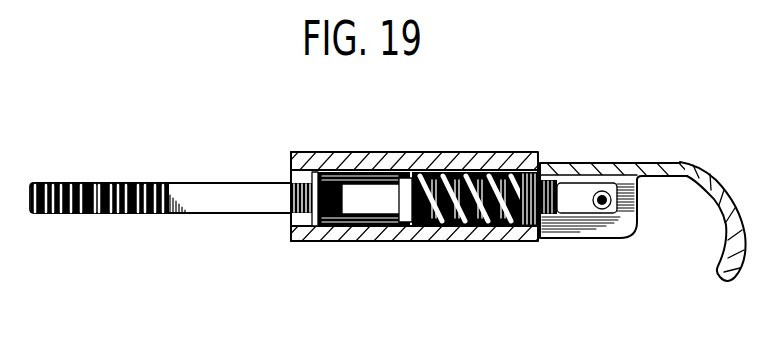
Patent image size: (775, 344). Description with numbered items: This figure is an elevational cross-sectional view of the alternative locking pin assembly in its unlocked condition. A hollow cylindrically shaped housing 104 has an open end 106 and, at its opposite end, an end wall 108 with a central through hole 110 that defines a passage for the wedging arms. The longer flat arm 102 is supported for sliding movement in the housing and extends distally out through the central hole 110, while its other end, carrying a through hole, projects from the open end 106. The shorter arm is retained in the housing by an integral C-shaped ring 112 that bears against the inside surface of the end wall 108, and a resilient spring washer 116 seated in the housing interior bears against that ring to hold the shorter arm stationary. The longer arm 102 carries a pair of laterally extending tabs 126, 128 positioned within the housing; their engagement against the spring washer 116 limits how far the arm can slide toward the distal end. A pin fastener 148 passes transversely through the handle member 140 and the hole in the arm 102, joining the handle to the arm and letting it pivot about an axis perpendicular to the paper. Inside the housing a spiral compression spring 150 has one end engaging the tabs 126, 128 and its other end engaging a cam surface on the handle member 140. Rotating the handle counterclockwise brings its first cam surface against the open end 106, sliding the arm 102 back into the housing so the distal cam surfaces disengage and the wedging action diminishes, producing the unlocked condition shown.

The arm 102 is at (202, 204).
The housing 104 is at (388, 153).
The open end 106 is at (553, 163).
The end wall 108 is at (290, 164).
The central through hole 110 is at (301, 217).
The C-shaped ring 112 is at (287, 182).
The spring washer 116 is at (344, 175).
The tab 126 is at (428, 172).
The tab 128 is at (407, 223).
The handle member 140 is at (733, 232).
The pin fastener 148 is at (604, 198).
The spiral compression spring 150 is at (477, 224).